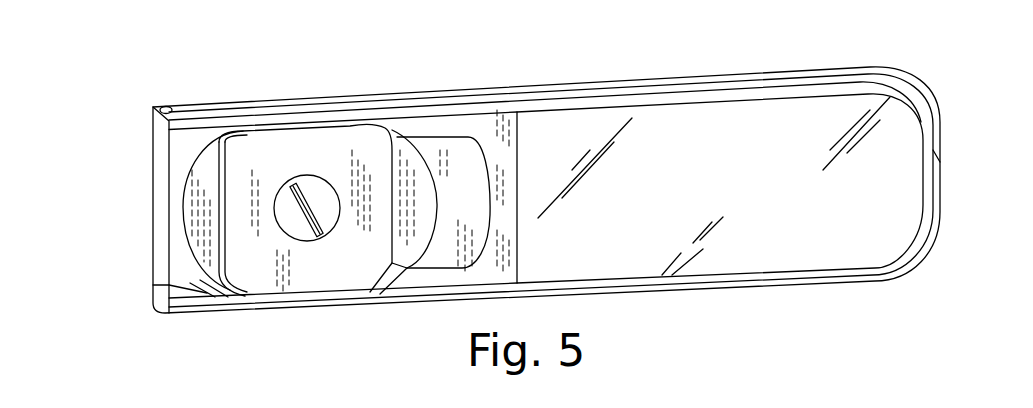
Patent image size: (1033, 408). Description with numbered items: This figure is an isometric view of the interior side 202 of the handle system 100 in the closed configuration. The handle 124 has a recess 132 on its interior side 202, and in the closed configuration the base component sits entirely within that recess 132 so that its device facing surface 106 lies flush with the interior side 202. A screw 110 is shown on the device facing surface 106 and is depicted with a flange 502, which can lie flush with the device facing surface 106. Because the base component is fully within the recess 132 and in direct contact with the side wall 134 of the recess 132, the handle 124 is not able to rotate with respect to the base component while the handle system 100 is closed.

The handle system 100 is at (107, 48).
The handle 124 is at (688, 80).
The interior side 202 is at (815, 217).
The side wall 134 is at (243, 132).
The device facing surface 106 is at (353, 147).
The screw 110 is at (290, 198).
The flange 502 is at (318, 176).
The recess 132 is at (387, 133).